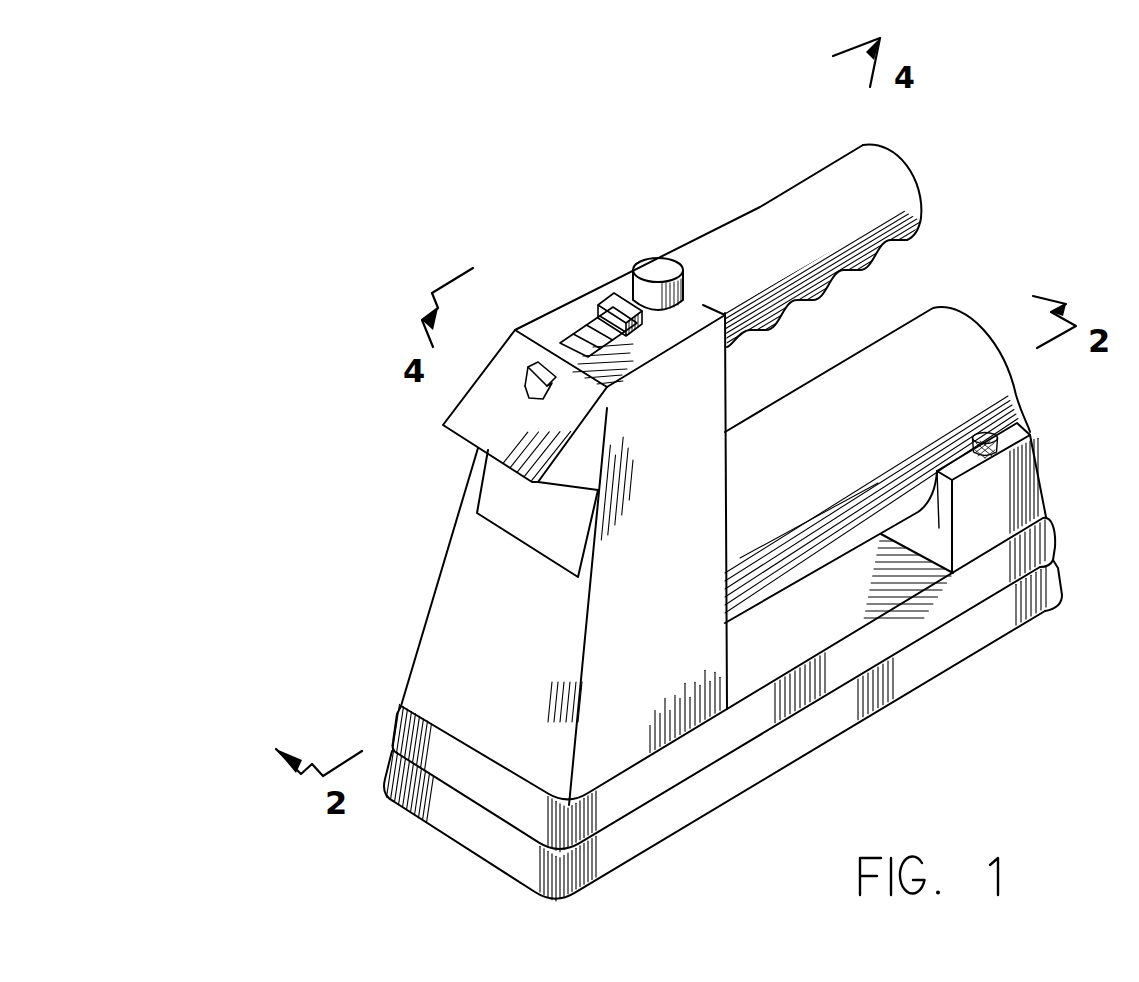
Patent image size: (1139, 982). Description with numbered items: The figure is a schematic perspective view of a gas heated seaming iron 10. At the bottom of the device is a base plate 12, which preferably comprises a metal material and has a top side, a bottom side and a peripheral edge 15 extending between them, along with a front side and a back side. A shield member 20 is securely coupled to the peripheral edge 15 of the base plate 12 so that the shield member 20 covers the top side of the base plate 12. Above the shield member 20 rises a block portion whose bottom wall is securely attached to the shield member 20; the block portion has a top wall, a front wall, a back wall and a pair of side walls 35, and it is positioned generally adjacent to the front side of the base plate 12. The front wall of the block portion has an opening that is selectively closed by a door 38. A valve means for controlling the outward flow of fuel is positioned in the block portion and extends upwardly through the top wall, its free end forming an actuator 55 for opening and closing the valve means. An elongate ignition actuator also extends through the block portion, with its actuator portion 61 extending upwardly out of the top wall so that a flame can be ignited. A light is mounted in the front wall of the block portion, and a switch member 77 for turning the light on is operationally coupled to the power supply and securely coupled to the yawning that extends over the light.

The gas heated seaming iron 10 is at (342, 458).
The base plate 12 is at (574, 896).
The peripheral edge 15 is at (700, 815).
The shield member 20 is at (562, 822).
The side walls 35 is at (676, 656).
The door 38 is at (495, 505).
The actuator 55 is at (656, 275).
The actuator portion 61 is at (618, 307).
The switch member 77 is at (541, 370).